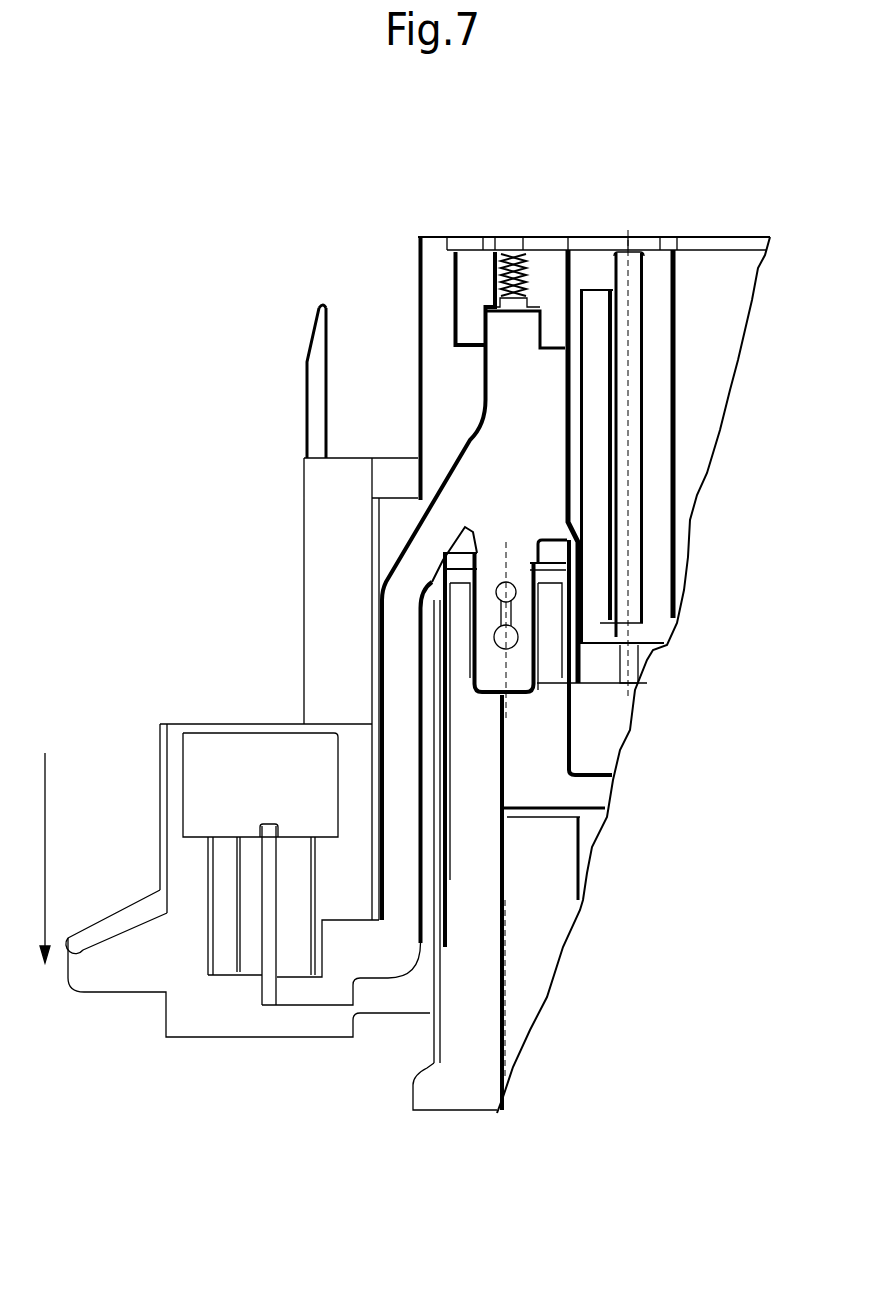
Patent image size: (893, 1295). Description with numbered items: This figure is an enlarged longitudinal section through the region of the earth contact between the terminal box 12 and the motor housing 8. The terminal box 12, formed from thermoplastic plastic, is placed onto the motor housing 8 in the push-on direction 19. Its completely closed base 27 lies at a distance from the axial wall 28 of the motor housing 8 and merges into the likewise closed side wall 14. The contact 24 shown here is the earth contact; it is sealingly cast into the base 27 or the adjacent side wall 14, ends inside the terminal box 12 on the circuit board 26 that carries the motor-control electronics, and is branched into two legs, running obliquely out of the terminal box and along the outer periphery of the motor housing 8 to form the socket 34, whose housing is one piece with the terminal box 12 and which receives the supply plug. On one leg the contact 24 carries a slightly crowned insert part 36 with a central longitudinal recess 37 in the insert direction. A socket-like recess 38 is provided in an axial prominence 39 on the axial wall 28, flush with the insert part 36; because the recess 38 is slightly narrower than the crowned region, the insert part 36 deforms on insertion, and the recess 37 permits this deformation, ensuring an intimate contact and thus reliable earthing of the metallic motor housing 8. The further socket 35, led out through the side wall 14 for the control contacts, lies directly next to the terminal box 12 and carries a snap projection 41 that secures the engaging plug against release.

The motor housing 8 is at (452, 1035).
The terminal box 12 is at (268, 580).
The side wall 14 is at (725, 322).
The push-on direction 19 is at (47, 862).
The contact 24 is at (474, 470).
The circuit board 26 is at (550, 243).
The base 27 is at (645, 657).
The axial wall 28 is at (603, 796).
The socket 34 is at (276, 798).
The socket 35 is at (358, 519).
The insert part 36 is at (522, 663).
The longitudinal recess 37 is at (495, 592).
The socket-like recess 38 is at (513, 684).
The axial prominence 39 is at (462, 653).
The snap projection 41 is at (318, 343).